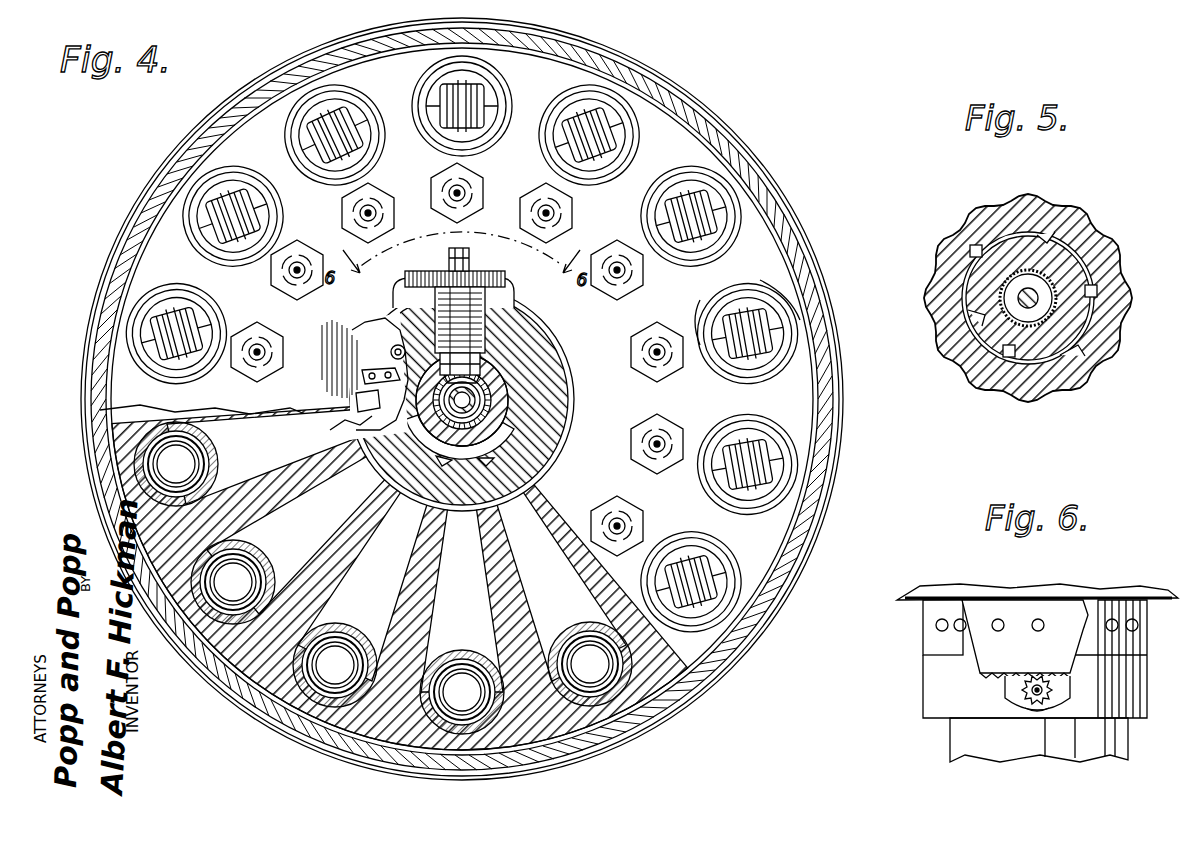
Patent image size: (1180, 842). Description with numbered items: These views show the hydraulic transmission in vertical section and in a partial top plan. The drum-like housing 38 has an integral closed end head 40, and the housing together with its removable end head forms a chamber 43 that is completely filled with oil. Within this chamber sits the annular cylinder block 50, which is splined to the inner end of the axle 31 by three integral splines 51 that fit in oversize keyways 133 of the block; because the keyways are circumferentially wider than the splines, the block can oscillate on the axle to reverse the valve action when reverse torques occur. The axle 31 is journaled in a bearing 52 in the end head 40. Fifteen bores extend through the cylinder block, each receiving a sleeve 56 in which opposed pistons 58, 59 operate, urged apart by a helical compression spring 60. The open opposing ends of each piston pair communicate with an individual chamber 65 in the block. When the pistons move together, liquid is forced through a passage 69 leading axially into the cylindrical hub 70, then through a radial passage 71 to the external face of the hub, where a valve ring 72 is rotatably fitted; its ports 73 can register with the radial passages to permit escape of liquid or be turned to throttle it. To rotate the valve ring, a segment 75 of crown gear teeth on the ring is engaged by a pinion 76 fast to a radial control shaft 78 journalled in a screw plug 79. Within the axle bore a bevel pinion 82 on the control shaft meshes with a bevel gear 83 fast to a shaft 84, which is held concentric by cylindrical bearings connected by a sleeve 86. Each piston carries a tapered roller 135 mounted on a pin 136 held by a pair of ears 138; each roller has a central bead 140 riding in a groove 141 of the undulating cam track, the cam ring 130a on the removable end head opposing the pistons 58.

In FIG. 4, the drum-like housing 38 is at (637, 72).
In FIG. 4, the chamber 43 is at (806, 424).
In FIG. 4, the sleeve 56 is at (722, 200).
In FIG. 4, the piston 58 is at (590, 636).
In FIG. 4, the piston 59 is at (800, 312).
In FIG. 4, the helical compression spring 60 is at (590, 664).
In FIG. 4, the chamber 65 is at (380, 571).
In FIG. 4, the passage 69 is at (390, 352).
In FIG. 4, the cylindrical hub 70 is at (339, 426).
In FIG. 4, the radial passage 71 is at (362, 375).
In FIG. 4, the valve ring 72 is at (356, 406).
In FIG. 6, the valve ring 72 is at (938, 615).
In FIG. 4, the port 73 is at (348, 392).
In FIG. 6, the port 73 is at (1038, 632).
In FIG. 4, the segment of crown gear teeth 75 is at (440, 271).
In FIG. 6, the segment of crown gear teeth 75 is at (1025, 657).
In FIG. 4, the pinion 76 is at (470, 262).
In FIG. 6, the pinion 76 is at (1020, 690).
In FIG. 4, the radial control shaft 78 is at (490, 346).
In FIG. 6, the radial control shaft 78 is at (1028, 706).
In FIG. 4, the screw plug 79 is at (516, 302).
In FIG. 6, the screw plug 79 is at (1040, 712).
In FIG. 4, the bevel pinion 82 is at (488, 370).
In FIG. 4, the bevel gear 83 is at (492, 405).
In FIG. 4, the shaft 84 is at (475, 412).
In FIG. 5, the shaft 84 is at (1036, 300).
In FIG. 4, the sleeve 86 is at (520, 190).
In FIG. 5, the sleeve 86 is at (1050, 316).
In FIG. 4, the axle 31 is at (505, 400).
In FIG. 5, the axle 31 is at (995, 273).
In FIG. 4, the spline 51 is at (408, 445).
In FIG. 5, the spline 51 is at (1047, 236).
In FIG. 4, the bearing 52 is at (530, 355).
In FIG. 6, the bearing 52 is at (930, 688).
In FIG. 4, the keyway 133 is at (432, 468).
In FIG. 5, the keyway 133 is at (975, 245).
In FIG. 4, the roller 135 is at (620, 108).
In FIG. 4, the pin 136 is at (700, 328).
In FIG. 4, the ear 138 is at (722, 213).
In FIG. 4, the bead 140 is at (618, 122).
In FIG. 4, the groove 141 is at (610, 138).
In FIG. 4, the cam ring 130a is at (605, 155).
In FIG. 5, the cylinder block 50 is at (1010, 203).
In FIG. 6, the cylinder block 50 is at (1028, 587).
In FIG. 6, the end head 40 is at (952, 745).